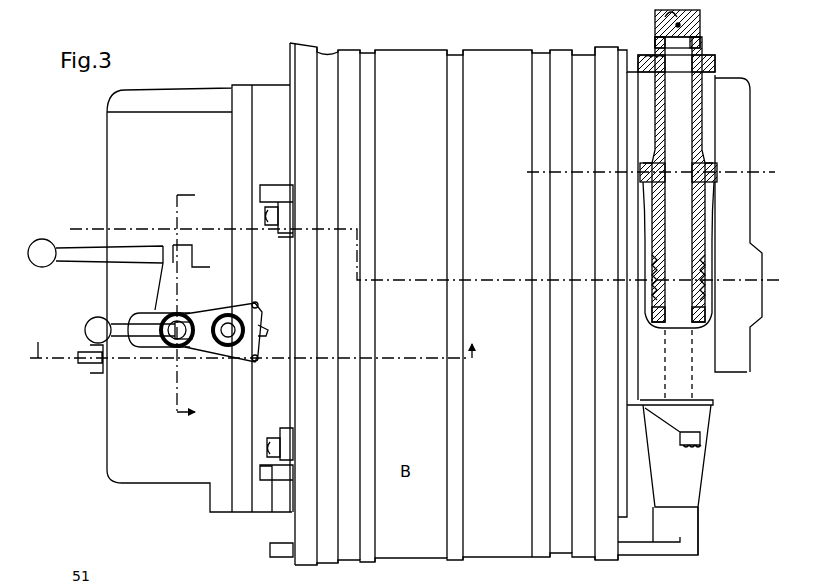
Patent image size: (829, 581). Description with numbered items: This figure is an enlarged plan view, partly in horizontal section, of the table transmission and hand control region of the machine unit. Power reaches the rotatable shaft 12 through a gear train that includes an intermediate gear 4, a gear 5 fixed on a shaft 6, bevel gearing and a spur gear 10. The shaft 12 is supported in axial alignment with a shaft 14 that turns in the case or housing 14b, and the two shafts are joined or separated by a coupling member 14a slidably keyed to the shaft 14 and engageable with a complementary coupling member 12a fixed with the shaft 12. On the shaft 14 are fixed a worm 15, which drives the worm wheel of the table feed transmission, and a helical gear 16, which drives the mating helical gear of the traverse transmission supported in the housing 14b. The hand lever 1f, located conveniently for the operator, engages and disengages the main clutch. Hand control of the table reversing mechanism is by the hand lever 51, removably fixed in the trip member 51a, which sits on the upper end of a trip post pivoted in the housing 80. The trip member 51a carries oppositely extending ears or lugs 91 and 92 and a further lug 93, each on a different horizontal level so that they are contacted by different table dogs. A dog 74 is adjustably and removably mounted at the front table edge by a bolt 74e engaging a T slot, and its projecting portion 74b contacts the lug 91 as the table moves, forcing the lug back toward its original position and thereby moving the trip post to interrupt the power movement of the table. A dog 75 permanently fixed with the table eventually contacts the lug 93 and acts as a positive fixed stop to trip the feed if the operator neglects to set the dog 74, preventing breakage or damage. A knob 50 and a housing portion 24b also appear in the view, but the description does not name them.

The shaft 12 is at (655, 30).
The coupling member 12a is at (700, 33).
The shaft 14 is at (687, 140).
The coupling member 14a is at (715, 66).
The case or housing 14b is at (713, 395).
The worm 15 is at (700, 262).
The helical gear 16 is at (714, 183).
The housing portion 24b is at (742, 372).
The hand lever 1f is at (695, 528).
The lever 50 is at (42, 240).
The hand lever 51 is at (92, 322).
The trip member 51a is at (202, 322).
The lug 91 is at (257, 306).
The lug 92 is at (257, 359).
The lug 93 is at (266, 333).
The dog 74 is at (288, 468).
The projecting portion 74b is at (266, 477).
The bolt 74e is at (272, 437).
The dog 75 is at (276, 558).
The case or housing 80 is at (237, 458).
The intermediate gear 4 is at (426, 245).
The gear 5 is at (651, 163).
The shaft 6 is at (251, 351).
The spur gear 10 is at (179, 304).